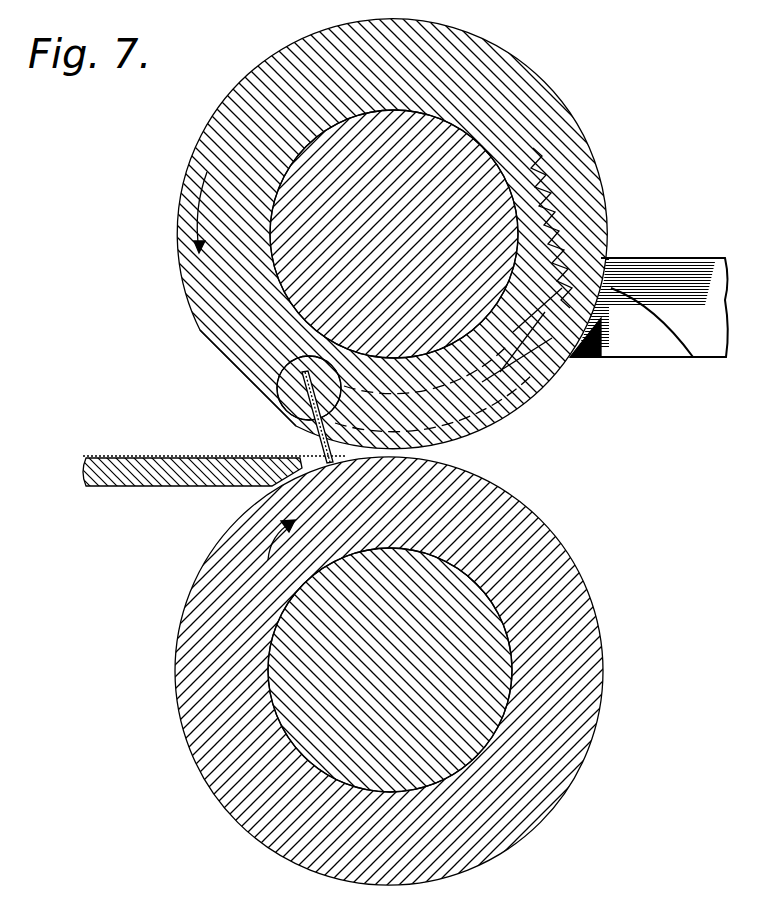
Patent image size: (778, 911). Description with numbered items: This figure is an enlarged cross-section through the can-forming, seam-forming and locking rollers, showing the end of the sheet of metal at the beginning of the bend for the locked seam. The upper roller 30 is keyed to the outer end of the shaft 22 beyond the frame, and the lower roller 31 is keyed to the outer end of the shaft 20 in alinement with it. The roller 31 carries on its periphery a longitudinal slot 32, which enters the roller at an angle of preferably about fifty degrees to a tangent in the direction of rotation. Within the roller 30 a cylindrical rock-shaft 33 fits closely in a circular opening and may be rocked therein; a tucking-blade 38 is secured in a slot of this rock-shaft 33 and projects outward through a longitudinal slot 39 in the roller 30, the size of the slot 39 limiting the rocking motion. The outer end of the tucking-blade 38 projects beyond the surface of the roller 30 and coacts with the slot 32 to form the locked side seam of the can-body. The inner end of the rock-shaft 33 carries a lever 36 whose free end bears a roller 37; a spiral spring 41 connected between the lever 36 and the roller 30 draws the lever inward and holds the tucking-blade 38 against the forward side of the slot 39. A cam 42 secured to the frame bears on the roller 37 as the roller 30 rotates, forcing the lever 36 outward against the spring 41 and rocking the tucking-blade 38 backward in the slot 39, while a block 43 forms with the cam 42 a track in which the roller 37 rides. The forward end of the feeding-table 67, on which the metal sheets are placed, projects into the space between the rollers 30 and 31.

The roller 30 is at (186, 214).
The shaft 22 is at (394, 234).
The roller 31 is at (506, 496).
The shaft 20 is at (390, 670).
The cylindrical rock-shaft 33 is at (287, 394).
The tucking-blade 38 is at (322, 441).
The longitudinal slot 39 is at (343, 431).
The lever 36 is at (493, 402).
The spiral spring 41 is at (558, 202).
The cam 42 is at (552, 345).
The roller 37 is at (584, 356).
The block 43 is at (625, 358).
The feeding-table 67 is at (150, 470).
The longitudinal slot 32 is at (330, 490).